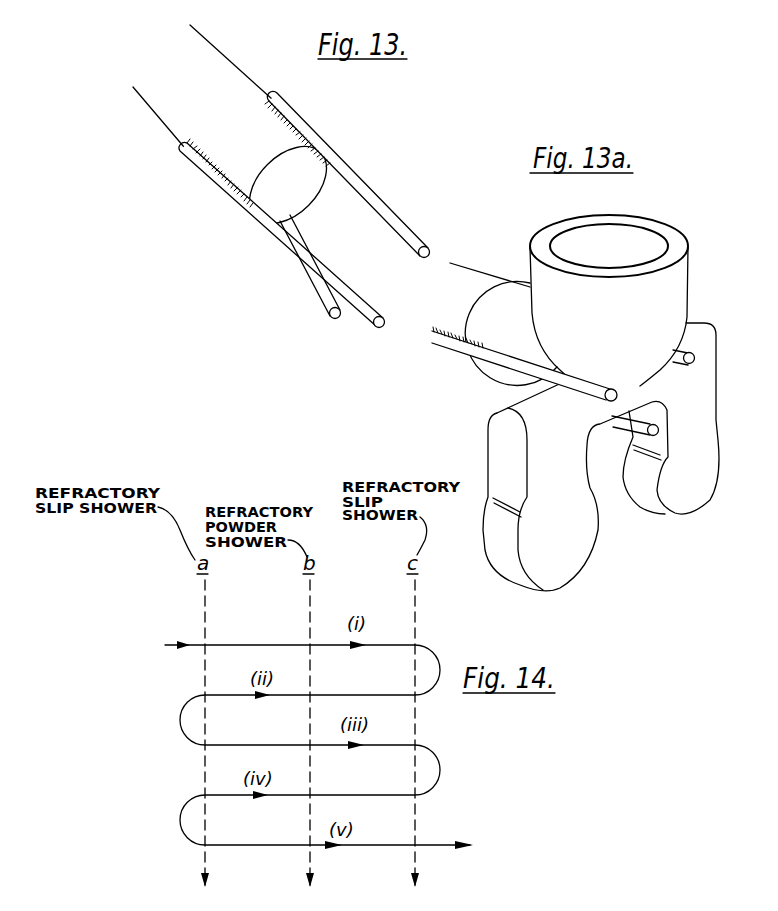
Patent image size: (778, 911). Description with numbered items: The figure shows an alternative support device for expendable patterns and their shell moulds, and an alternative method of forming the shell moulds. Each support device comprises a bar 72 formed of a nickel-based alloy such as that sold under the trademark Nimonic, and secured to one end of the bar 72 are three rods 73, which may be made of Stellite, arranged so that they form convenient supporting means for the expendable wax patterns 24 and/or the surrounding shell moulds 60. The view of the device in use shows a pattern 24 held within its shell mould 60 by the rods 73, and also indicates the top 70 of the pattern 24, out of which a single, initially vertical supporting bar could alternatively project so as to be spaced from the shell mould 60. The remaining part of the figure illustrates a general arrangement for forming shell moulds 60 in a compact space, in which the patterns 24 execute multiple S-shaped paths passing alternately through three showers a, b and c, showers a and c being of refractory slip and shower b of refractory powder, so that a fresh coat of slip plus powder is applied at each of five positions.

In FIG. 13A, the expendable wax pattern 24 is at (598, 237).
In FIG. 13A, the shell mould 60 is at (629, 284).
In FIG. 13A, the top of the pattern 70 is at (648, 263).
In FIG. 13, the bar 72 is at (235, 82).
In FIG. 13A, the bar 72 is at (483, 282).
In FIG. 13, the tube 73 is at (392, 212).
In FIG. 13A, the tube 73 is at (513, 360).